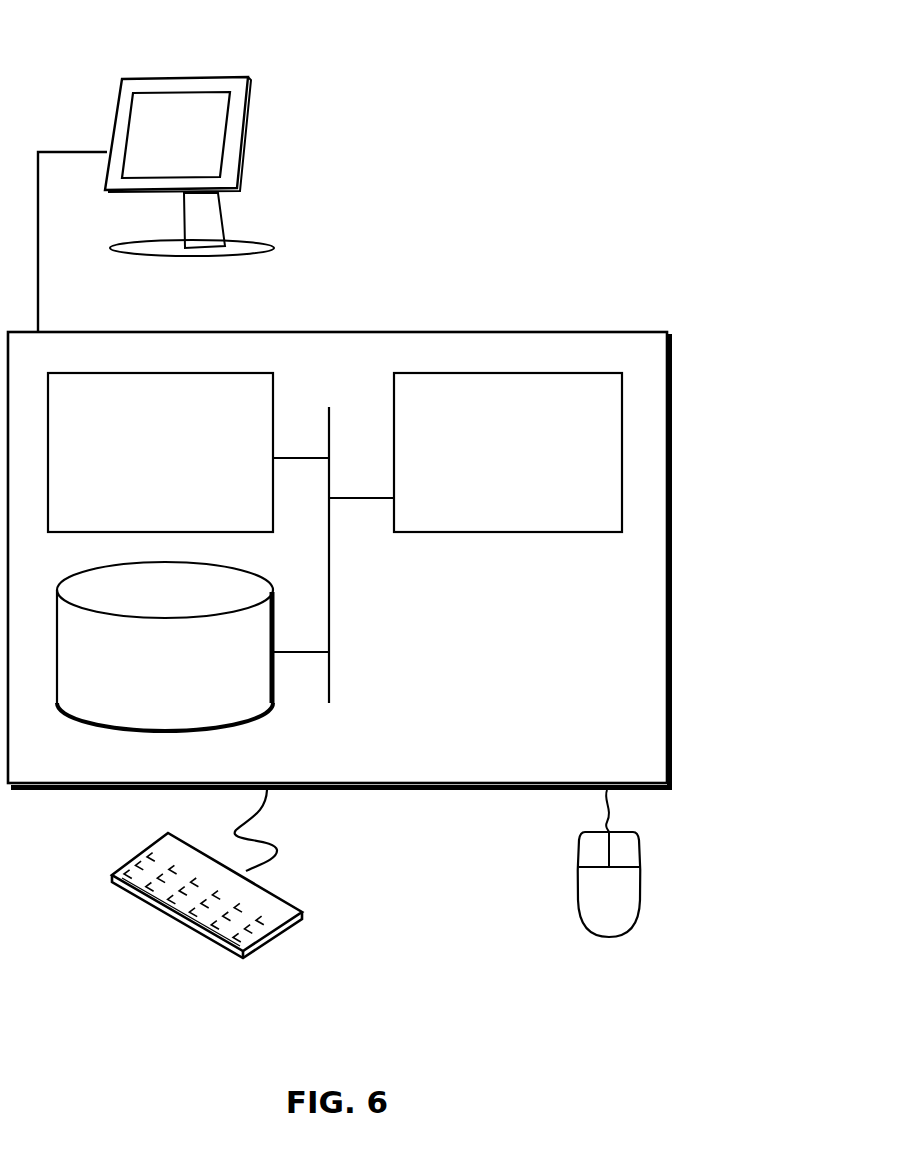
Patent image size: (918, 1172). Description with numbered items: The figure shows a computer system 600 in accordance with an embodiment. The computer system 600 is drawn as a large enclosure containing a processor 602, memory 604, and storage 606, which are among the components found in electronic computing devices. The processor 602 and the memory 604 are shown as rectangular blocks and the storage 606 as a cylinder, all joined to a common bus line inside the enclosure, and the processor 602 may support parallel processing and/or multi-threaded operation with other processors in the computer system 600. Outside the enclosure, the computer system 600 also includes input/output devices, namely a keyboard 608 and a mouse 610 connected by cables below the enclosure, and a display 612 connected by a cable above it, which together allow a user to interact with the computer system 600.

The computer system 600 is at (385, 310).
The processor 602 is at (508, 452).
The memory 604 is at (160, 452).
The storage 606 is at (165, 646).
The keyboard 608 is at (130, 897).
The mouse 610 is at (609, 884).
The display 612 is at (189, 181).